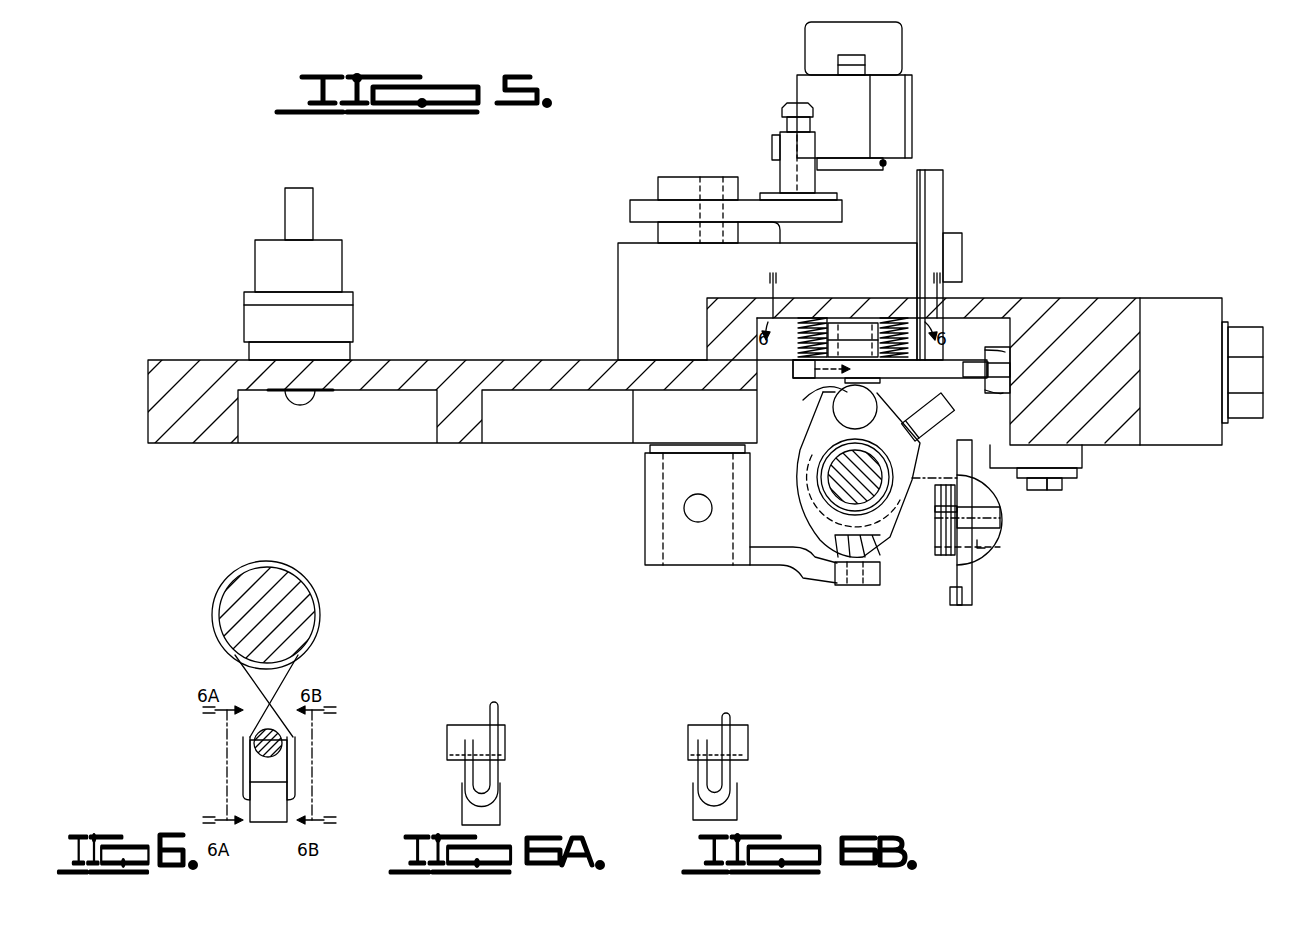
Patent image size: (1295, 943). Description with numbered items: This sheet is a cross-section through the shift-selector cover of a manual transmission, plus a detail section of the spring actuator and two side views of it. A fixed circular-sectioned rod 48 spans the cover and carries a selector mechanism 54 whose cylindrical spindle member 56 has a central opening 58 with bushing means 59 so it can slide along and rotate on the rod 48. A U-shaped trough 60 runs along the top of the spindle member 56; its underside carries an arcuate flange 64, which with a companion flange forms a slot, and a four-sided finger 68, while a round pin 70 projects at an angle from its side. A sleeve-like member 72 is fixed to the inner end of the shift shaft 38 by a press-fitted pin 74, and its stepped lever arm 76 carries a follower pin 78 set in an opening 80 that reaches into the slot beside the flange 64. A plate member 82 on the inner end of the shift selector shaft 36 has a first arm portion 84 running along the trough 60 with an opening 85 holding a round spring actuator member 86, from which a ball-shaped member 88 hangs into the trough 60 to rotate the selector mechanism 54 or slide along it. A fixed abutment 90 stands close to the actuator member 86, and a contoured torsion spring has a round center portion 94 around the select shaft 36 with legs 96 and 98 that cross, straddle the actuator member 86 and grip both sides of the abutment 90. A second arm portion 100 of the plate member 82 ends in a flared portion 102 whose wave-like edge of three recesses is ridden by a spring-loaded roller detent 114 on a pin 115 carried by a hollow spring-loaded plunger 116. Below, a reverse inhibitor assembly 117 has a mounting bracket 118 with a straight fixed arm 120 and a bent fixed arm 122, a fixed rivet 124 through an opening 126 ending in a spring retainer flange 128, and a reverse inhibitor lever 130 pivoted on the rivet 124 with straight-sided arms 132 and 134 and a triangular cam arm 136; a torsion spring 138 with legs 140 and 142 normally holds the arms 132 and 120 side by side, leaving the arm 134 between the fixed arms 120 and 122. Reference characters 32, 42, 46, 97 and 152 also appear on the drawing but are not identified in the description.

In FIG. 5, the valve body 32 is at (1010, 286).
In FIG. 5, the shift selector shaft 36 is at (890, 165).
In FIG. 6, the shift selector shaft 36 is at (235, 570).
In FIG. 5, the shift shaft 38 is at (688, 178).
In FIG. 5, the bracket 42 is at (630, 210).
In FIG. 5, the bolt 46 is at (775, 148).
In FIG. 5, the fixed circular sectioned rod 48 is at (800, 460).
In FIG. 5, the selector mechanism 54 is at (792, 446).
In FIG. 5, the cylindrical spindle member 56 is at (818, 480).
In FIG. 5, the central opening 58 is at (850, 485).
In FIG. 5, the bushing means 59 is at (820, 470).
In FIG. 5, the U-shaped trough 60 is at (855, 407).
In FIG. 5, the arcuate-shaped flange 64 is at (900, 565).
In FIG. 5, the four-sided finger 68 is at (936, 488).
In FIG. 5, the round pin 70 is at (950, 412).
In FIG. 5, the sleeve-like member 72 is at (645, 487).
In FIG. 5, the press-fitted pin 74 is at (698, 508).
In FIG. 5, the stepped lever arm 76 is at (800, 582).
In FIG. 5, the follower pin 78 is at (845, 585).
In FIG. 5, the opening 80 is at (865, 585).
In FIG. 5, the plate member 82 is at (984, 362).
In FIG. 5, the first arm portion 84 is at (870, 323).
In FIG. 5, the opening 85 is at (793, 370).
In FIG. 5, the spring actuator member 86 is at (855, 323).
In FIG. 6, the spring actuator member 86 is at (255, 745).
In FIG. 6A, the spring actuator member 86 is at (460, 725).
In FIG. 6B, the spring actuator member 86 is at (703, 725).
In FIG. 5, the ball-shaped member 88 is at (808, 392).
In FIG. 5, the fixed abutment 90 is at (930, 375).
In FIG. 6, the fixed abutment 90 is at (282, 788).
In FIG. 6A, the fixed abutment 90 is at (462, 805).
In FIG. 6B, the fixed abutment 90 is at (737, 803).
In FIG. 5, the round center portion 94 is at (800, 318).
In FIG. 6, the round center portion 94 is at (318, 610).
In FIG. 5, the spring leg 96 is at (828, 330).
In FIG. 6, the spring leg 96 is at (290, 672).
In FIG. 6A, the spring leg 96 is at (465, 770).
In FIG. 5, the loop 97 is at (906, 346).
In FIG. 6, the loop 97 is at (214, 636).
In FIG. 5, the spring leg 98 is at (893, 318).
In FIG. 6, the spring leg 98 is at (250, 676).
In FIG. 6B, the spring leg 98 is at (730, 770).
In FIG. 5, the second arm portion 100 is at (1000, 347).
In FIG. 5, the flared portion 102 is at (1008, 376).
In FIG. 5, the spring-loaded roller detent 114 is at (1008, 360).
In FIG. 5, the pin 115 is at (1005, 352).
In FIG. 5, the hollow spring-loaded plunger 116 is at (1003, 393).
In FIG. 5, the reverse inhibitor assembly 117 is at (998, 560).
In FIG. 5, the mounting bracket 118 is at (995, 455).
In FIG. 5, the straight fixed arm 120 is at (1000, 520).
In FIG. 5, the bent fixed arm 122 is at (962, 600).
In FIG. 5, the fixed rivet 124 is at (1000, 528).
In FIG. 5, the opening 126 is at (985, 575).
In FIG. 5, the spring retainer flange 128 is at (935, 545).
In FIG. 5, the reverse inhibitor lever 130 is at (964, 472).
In FIG. 5, the straight-sided arm 132 is at (935, 525).
In FIG. 5, the straight-sided arm 134 is at (962, 605).
In FIG. 5, the cam arm 136 is at (935, 470).
In FIG. 5, the torsion spring 138 is at (950, 565).
In FIG. 5, the spring leg 140 is at (985, 508).
In FIG. 5, the spring leg 142 is at (1000, 547).
In FIG. 5, the pin 152 is at (967, 517).